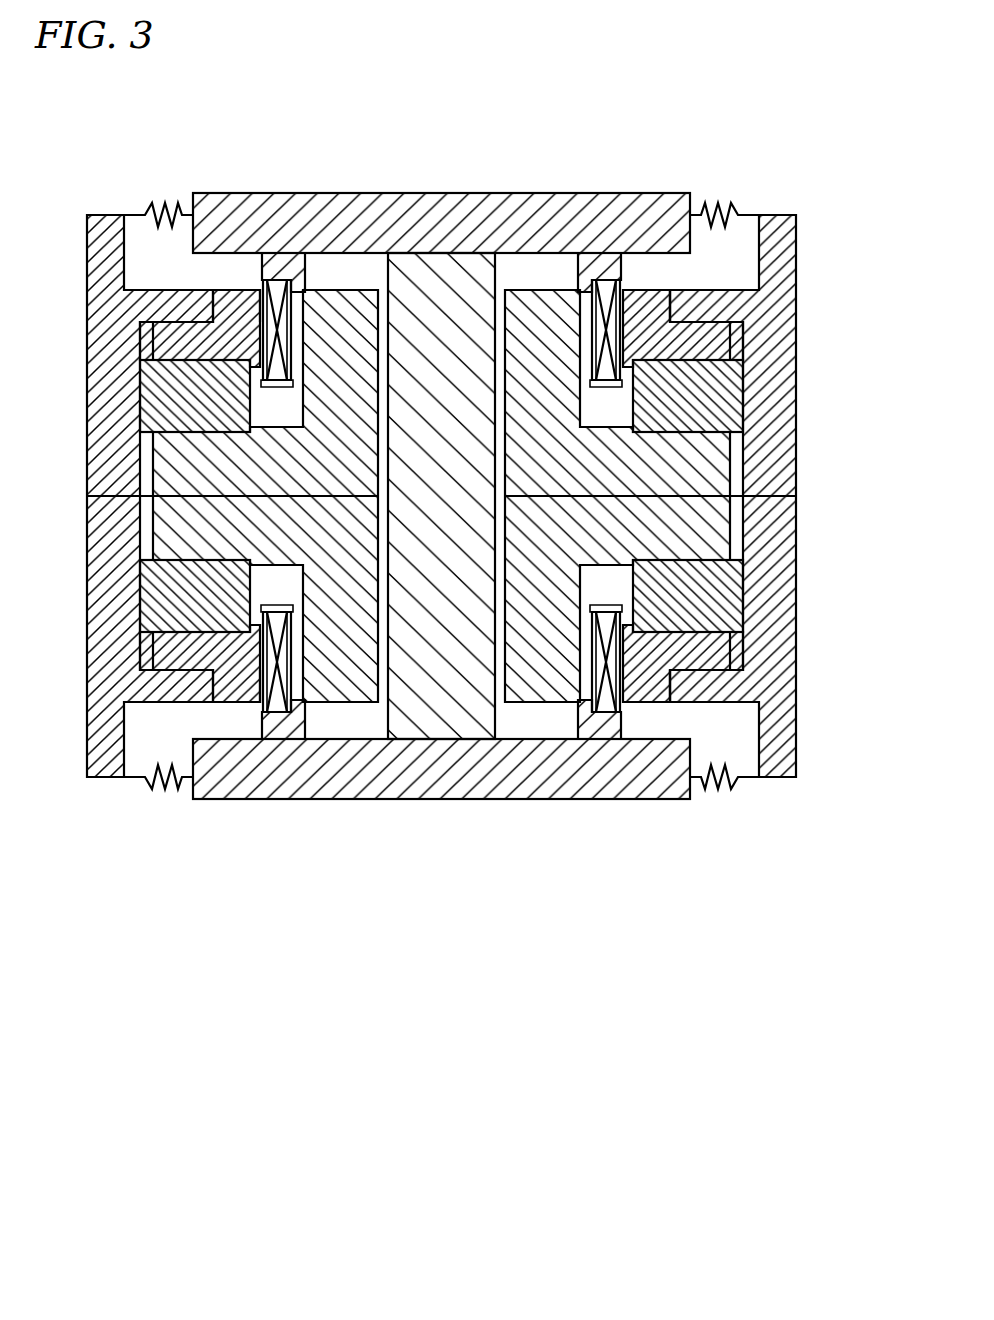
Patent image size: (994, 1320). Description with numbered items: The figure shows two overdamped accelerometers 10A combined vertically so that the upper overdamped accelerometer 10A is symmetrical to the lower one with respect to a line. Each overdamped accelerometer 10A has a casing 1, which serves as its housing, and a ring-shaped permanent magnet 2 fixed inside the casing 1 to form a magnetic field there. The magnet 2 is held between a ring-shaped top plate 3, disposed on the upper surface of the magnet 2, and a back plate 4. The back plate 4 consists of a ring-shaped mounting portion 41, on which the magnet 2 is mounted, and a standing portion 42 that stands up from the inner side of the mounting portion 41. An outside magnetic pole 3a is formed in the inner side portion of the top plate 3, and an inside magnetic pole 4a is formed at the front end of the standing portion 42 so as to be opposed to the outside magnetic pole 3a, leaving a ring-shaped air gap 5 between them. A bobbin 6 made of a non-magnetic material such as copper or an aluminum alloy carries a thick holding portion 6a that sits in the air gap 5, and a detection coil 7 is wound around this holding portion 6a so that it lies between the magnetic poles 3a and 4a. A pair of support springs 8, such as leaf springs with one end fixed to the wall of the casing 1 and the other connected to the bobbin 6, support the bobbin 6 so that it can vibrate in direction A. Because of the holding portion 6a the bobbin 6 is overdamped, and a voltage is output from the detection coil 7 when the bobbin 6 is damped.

The casing 1 is at (780, 777).
The magnet 2 is at (717, 597).
The top plate 3 is at (717, 650).
The outside magnetic pole 3a is at (661, 692).
The back plate 4 is at (437, 497).
The inside magnetic pole 4a is at (548, 664).
The mounting portion 41 is at (717, 527).
The standing portion 42 is at (543, 757).
The air gap 5 is at (608, 700).
The bobbin 6 is at (437, 267).
The holding portion 6a is at (599, 722).
The detection coil 7 is at (583, 630).
The support spring 8 is at (720, 787).
The overdamped accelerometer 10A is at (508, 93).
The direction A is at (438, 1051).